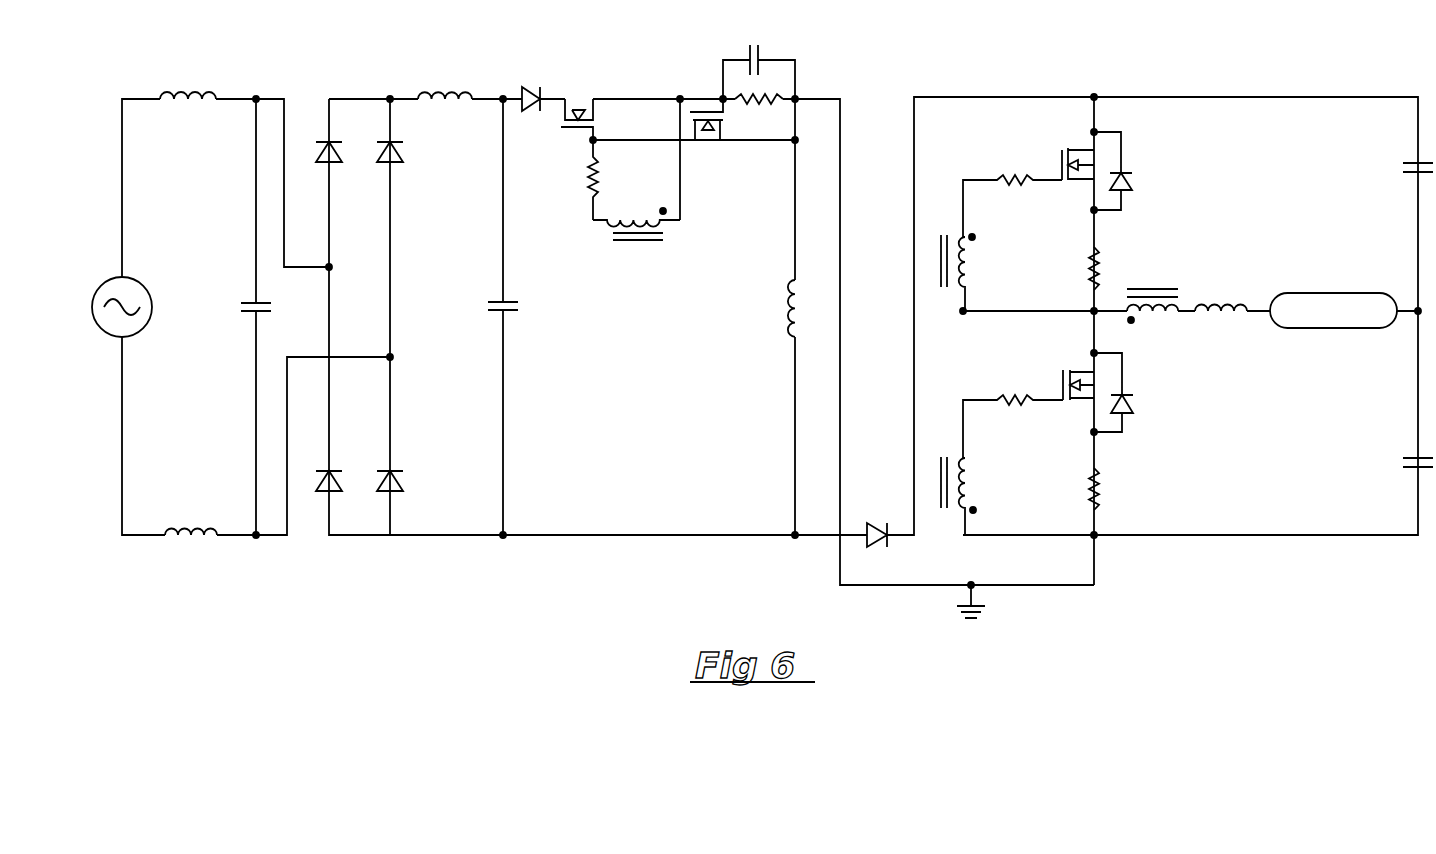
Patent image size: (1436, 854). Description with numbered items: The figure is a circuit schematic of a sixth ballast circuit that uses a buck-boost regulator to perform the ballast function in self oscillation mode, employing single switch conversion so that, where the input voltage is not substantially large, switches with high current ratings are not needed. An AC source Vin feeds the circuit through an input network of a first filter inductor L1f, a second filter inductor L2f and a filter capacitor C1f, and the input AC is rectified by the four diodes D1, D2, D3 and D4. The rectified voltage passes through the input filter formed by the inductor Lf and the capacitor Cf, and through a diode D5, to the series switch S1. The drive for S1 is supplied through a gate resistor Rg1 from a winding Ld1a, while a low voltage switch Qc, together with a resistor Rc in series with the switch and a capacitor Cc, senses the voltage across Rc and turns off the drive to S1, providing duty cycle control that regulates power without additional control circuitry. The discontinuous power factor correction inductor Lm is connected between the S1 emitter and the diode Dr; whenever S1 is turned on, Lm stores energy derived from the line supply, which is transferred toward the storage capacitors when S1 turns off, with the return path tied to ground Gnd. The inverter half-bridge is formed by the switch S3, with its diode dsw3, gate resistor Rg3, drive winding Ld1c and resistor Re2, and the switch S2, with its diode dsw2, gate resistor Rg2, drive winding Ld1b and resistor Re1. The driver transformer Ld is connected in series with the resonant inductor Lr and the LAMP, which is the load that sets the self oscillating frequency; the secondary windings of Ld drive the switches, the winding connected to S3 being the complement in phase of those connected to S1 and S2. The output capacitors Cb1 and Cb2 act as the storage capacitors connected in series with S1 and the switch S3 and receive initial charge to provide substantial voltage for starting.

The AC input voltage source Vin is at (161, 323).
The input filter inductor L1f is at (188, 82).
The input filter inductor L2f is at (191, 519).
The input filter capacitor C1f is at (271, 297).
The rectifier diode D1 is at (339, 139).
The rectifier diode D2 is at (400, 139).
The rectifier diode D3 is at (339, 468).
The rectifier diode D4 is at (400, 468).
The input filter inductor Lf is at (445, 82).
The diode D5 is at (527, 84).
The input filter capacitor Cf is at (513, 294).
The series switch S1 is at (583, 106).
The gate resistor Rg1 is at (614, 180).
The drive transformer winding Ld1a is at (636, 244).
The low voltage switch Qc is at (706, 137).
The sensing resistor Rc is at (759, 115).
The control capacitor Cc is at (759, 64).
The power factor correction inductor Lm is at (769, 308).
The diode Dr is at (846, 520).
The ground Gnd is at (991, 612).
The switch S3 is at (1112, 139).
The switch diode dsw3 is at (1145, 198).
The gate resistor Rg3 is at (1012, 194).
The drive transformer winding Ld1c is at (979, 272).
The resistor Re2 is at (1071, 263).
The driver transformer Ld is at (1159, 294).
The resonant inductor Lr is at (1221, 296).
The lamp LAMP is at (1333, 310).
The output capacitor Cb1 is at (1397, 156).
The output capacitor Cb2 is at (1398, 446).
The switch S2 is at (1118, 369).
The switch diode dsw2 is at (1148, 420).
The gate resistor Rg2 is at (1013, 415).
The drive transformer winding Ld1b is at (981, 496).
The resistor Re1 is at (1072, 480).